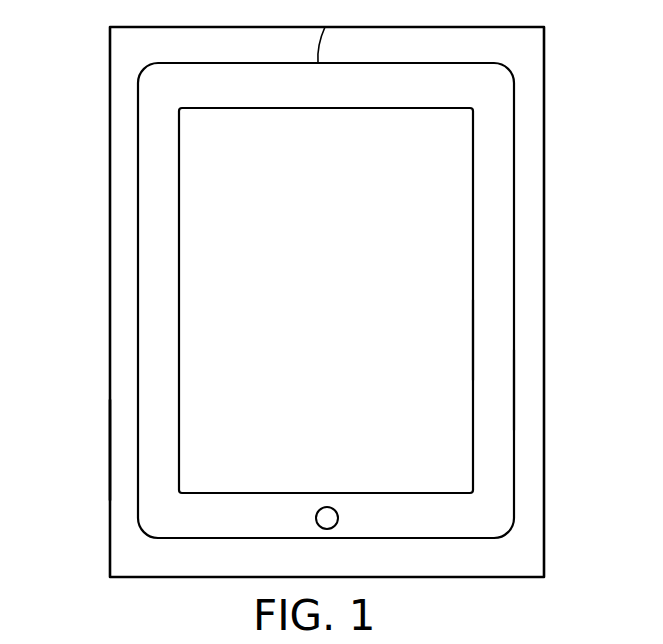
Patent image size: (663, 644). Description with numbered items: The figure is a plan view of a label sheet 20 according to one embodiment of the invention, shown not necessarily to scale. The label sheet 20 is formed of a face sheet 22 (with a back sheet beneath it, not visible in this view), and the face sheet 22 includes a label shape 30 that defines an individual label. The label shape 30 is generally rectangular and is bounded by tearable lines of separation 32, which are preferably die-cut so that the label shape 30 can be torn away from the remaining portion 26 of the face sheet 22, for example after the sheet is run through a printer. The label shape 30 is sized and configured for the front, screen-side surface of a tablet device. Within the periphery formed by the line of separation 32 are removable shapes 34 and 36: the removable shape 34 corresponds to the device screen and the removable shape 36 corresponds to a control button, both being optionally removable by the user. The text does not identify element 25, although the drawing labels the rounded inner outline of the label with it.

The label sheet 20 is at (319, 302).
The face sheet 22 is at (537, 271).
The bezel outer edge 25 is at (148, 302).
The remaining portion 26 is at (118, 450).
The label shape 30 is at (505, 340).
The tearable lines of separation 32 is at (515, 397).
The removable shape 34 is at (187, 219).
The removable shape 36 is at (330, 508).